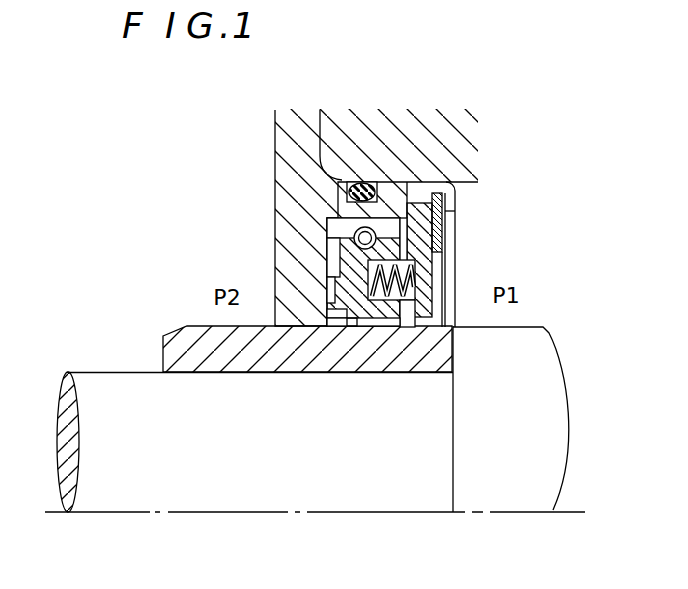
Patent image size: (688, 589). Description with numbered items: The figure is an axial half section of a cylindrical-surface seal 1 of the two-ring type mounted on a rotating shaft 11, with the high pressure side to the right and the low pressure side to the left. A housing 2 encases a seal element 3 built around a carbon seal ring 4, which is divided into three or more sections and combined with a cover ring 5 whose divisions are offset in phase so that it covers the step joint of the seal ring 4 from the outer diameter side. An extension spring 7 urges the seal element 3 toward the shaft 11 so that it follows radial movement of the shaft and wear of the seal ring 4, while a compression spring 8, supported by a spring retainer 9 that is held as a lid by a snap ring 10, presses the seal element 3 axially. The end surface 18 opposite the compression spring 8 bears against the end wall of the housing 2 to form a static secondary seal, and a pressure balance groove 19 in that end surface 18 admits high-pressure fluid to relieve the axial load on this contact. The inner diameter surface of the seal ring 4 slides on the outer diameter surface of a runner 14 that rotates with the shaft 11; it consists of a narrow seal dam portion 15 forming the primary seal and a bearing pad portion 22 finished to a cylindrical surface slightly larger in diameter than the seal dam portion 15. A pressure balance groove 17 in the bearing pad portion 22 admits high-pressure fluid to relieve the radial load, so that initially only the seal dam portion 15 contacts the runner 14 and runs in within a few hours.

The cylindrical-surface seal 1 is at (352, 300).
The housing 2 is at (288, 152).
The seal element 3 is at (392, 234).
The seal ring 4 is at (347, 326).
The cover ring 5 is at (343, 180).
The extension spring 7 is at (372, 227).
The compression spring 8 is at (442, 287).
The spring retainer 9 is at (442, 272).
The snap ring 10 is at (445, 229).
The shaft 11 is at (137, 490).
The runner 14 is at (193, 345).
The seal dam portion 15 is at (353, 303).
The pressure balance groove 17 is at (402, 322).
The end surface 18 is at (326, 255).
The pressure balance groove 19 is at (326, 278).
The bearing pad portion 22 is at (384, 318).